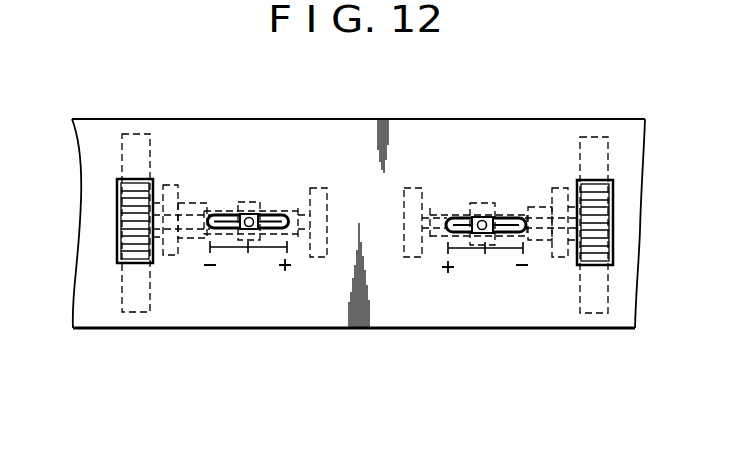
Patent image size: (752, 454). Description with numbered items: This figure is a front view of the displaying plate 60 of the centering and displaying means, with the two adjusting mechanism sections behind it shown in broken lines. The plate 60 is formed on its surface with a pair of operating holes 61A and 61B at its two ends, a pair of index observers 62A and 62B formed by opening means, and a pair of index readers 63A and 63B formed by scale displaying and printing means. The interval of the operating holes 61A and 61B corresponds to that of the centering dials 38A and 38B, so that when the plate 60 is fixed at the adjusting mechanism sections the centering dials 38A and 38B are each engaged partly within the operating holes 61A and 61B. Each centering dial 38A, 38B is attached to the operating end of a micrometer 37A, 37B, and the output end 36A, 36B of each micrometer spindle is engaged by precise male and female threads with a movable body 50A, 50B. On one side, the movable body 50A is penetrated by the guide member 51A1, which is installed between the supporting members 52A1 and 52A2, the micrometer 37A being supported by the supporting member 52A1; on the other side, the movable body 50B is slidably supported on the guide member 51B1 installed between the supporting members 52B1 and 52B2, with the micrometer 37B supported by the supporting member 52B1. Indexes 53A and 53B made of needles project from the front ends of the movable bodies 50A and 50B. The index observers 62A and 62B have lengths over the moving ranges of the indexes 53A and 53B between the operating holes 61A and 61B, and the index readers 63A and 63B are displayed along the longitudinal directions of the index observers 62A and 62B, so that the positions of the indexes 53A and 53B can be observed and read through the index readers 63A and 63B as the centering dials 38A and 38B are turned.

The displaying plate 60 is at (375, 331).
The centering dial 38B is at (134, 312).
The operating hole 61B is at (118, 218).
The supporting member 52B1 is at (168, 183).
The micrometer 37B is at (195, 203).
The output end 36B is at (227, 209).
The movable body 50B is at (261, 201).
The index observer 62B is at (233, 229).
The index 53B is at (251, 230).
The index reader 63B is at (300, 264).
The guide member 51B1 is at (297, 207).
The supporting member 52B2 is at (327, 188).
The supporting member 52A2 is at (413, 187).
The guide member 51A1 is at (433, 207).
The output end 36A is at (507, 213).
The movable body 50A is at (475, 202).
The index observer 62A is at (465, 233).
The index 53A is at (485, 228).
The index reader 63A is at (455, 278).
The micrometer 37A is at (537, 206).
The supporting member 52A1 is at (560, 187).
The operating hole 61A is at (613, 222).
The centering dial 38A is at (588, 313).